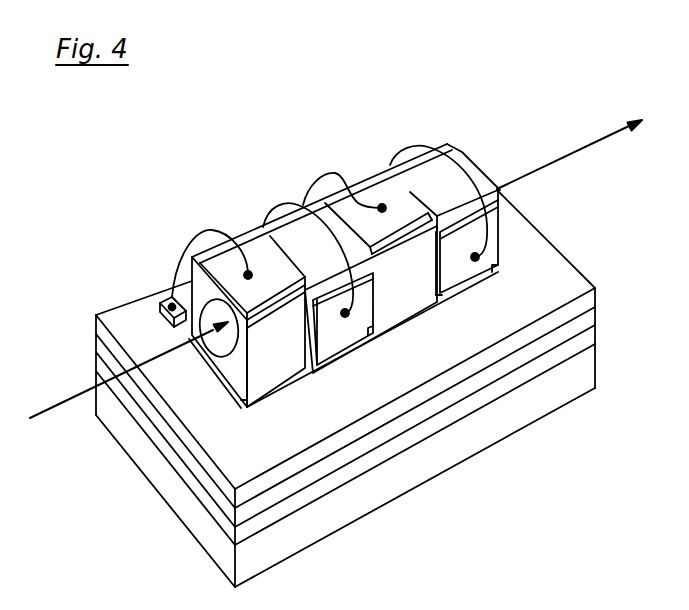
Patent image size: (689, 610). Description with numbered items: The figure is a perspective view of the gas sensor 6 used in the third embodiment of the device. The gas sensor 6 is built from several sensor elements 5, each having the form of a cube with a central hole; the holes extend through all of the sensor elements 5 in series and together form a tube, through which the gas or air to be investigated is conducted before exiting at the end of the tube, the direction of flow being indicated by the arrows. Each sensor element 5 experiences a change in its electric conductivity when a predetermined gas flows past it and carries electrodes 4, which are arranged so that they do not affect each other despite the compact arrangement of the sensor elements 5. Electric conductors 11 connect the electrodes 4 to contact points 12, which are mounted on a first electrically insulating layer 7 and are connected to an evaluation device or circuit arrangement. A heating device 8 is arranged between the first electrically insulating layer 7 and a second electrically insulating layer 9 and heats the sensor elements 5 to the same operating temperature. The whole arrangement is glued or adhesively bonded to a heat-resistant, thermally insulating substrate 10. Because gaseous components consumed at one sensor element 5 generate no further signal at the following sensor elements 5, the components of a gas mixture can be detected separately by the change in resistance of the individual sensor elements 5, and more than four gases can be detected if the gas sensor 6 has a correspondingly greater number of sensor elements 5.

The electrodes 4 is at (260, 257).
The sensor elements 5 is at (141, 202).
The gas sensor 6 is at (104, 106).
The first electrically insulating layer 7 is at (587, 302).
The heating device 8 is at (587, 321).
The second electrically insulating layer 9 is at (587, 340).
The substrate 10 is at (587, 363).
The electric conductors 11 is at (268, 210).
The contact points 12 is at (172, 307).